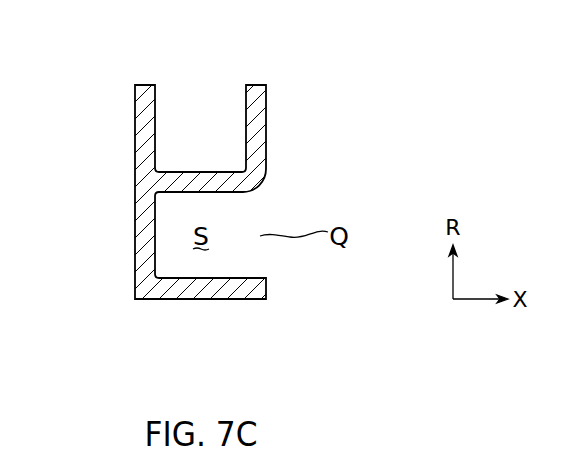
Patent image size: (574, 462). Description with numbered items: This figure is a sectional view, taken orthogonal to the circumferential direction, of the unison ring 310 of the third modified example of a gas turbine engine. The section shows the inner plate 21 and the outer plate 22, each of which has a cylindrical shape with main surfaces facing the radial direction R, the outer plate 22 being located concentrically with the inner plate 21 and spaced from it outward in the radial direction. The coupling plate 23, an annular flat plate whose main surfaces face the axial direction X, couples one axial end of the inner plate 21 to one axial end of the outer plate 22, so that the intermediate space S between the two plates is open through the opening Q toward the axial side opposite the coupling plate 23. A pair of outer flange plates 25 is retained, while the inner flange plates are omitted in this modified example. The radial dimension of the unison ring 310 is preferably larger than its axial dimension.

The unison ring 310 is at (283, 80).
The outer plate 22 is at (203, 170).
The outer flange plates 25 is at (140, 143).
The coupling plate 23 is at (140, 237).
The inner plate 21 is at (204, 300).